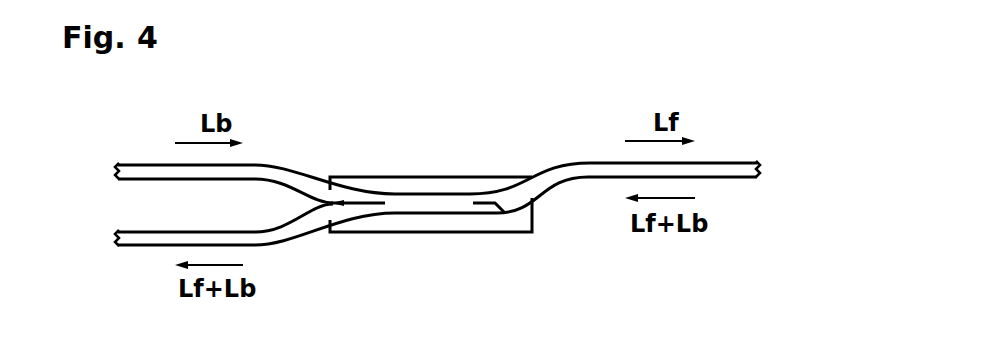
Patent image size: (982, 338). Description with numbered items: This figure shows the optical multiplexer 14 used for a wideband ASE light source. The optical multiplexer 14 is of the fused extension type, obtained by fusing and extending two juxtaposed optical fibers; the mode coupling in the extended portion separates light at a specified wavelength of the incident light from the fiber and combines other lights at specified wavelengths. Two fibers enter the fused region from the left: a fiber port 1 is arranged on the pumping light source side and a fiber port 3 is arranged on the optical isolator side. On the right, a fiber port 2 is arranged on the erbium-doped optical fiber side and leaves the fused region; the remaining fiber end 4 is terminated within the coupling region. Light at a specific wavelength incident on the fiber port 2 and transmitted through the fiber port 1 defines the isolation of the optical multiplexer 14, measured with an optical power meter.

The fiber port 1 is at (148, 172).
The fiber port 2 is at (744, 166).
The fiber port 3 is at (139, 240).
The terminated fiber end 4 is at (495, 209).
The optical multiplexer 14 is at (452, 158).